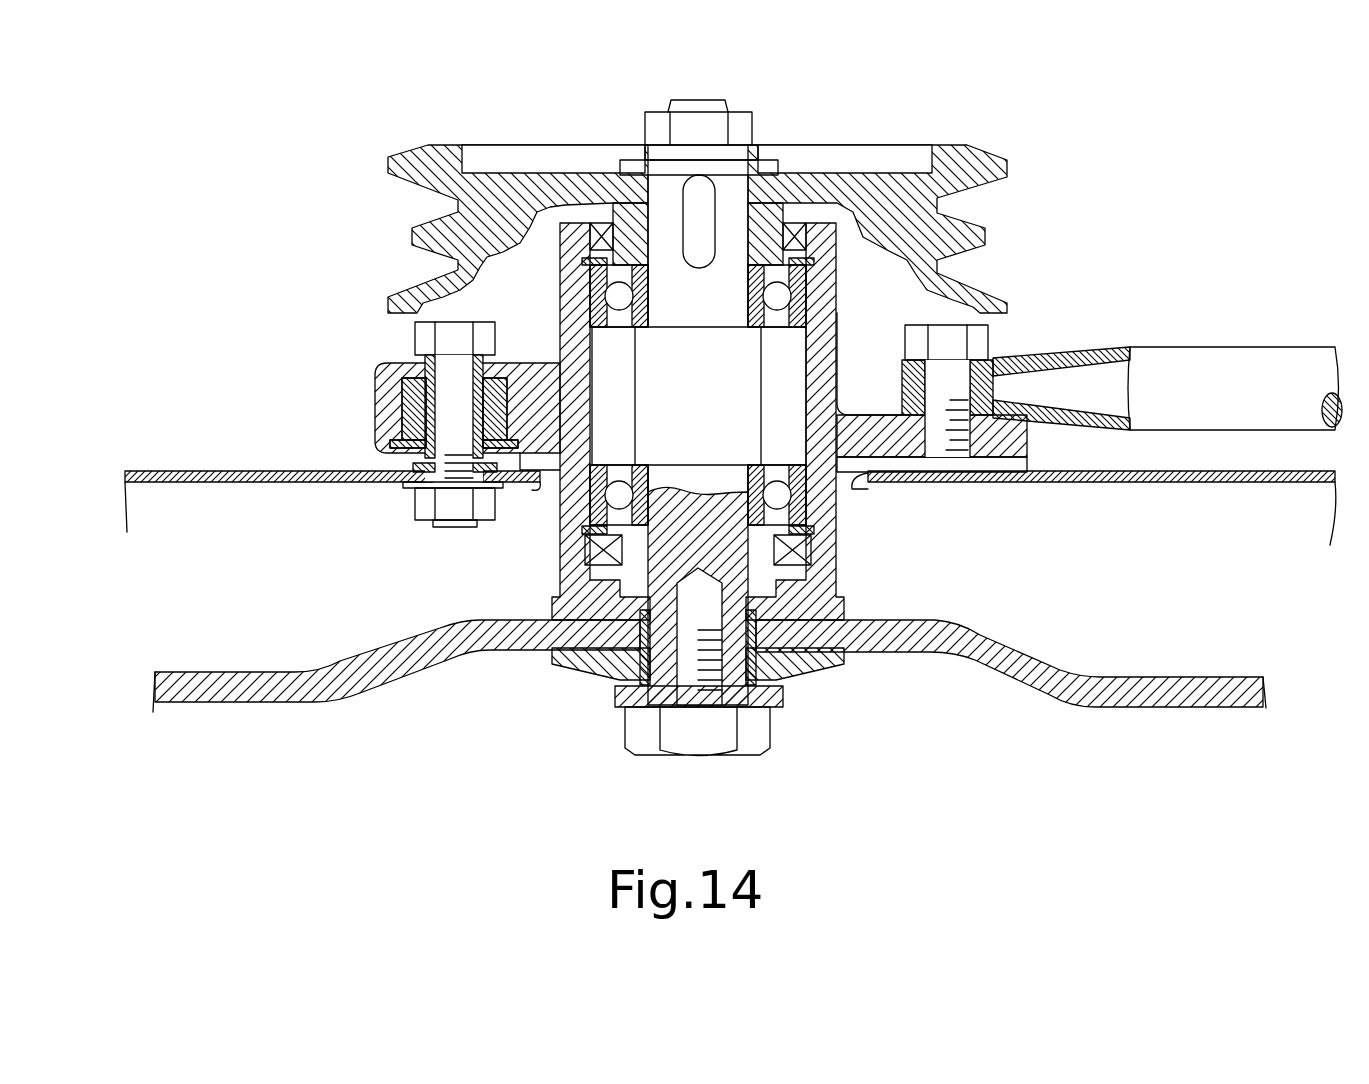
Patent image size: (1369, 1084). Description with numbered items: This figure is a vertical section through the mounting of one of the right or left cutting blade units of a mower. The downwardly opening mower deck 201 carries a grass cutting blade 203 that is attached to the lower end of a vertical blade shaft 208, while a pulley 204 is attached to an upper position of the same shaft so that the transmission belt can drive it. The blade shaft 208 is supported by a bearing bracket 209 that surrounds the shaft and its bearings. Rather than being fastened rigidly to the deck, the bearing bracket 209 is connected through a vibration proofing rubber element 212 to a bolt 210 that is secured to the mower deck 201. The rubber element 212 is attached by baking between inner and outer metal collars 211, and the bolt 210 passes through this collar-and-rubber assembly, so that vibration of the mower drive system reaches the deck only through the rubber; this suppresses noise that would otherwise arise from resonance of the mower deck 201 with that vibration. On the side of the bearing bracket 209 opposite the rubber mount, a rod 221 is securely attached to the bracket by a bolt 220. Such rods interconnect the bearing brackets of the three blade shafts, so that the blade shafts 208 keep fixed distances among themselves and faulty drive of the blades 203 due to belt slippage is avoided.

The mower deck 201 is at (172, 470).
The grass cutting blade 203 is at (357, 655).
The pulley 204 is at (982, 222).
The blade shaft 208 is at (745, 380).
The bearing bracket 209 is at (832, 523).
The bolt 210 is at (418, 340).
The inner and outer metal collars 211 is at (378, 435).
The vibration proofing rubber element 212 is at (402, 387).
The bolt 220 is at (982, 343).
The rod 221 is at (1230, 355).